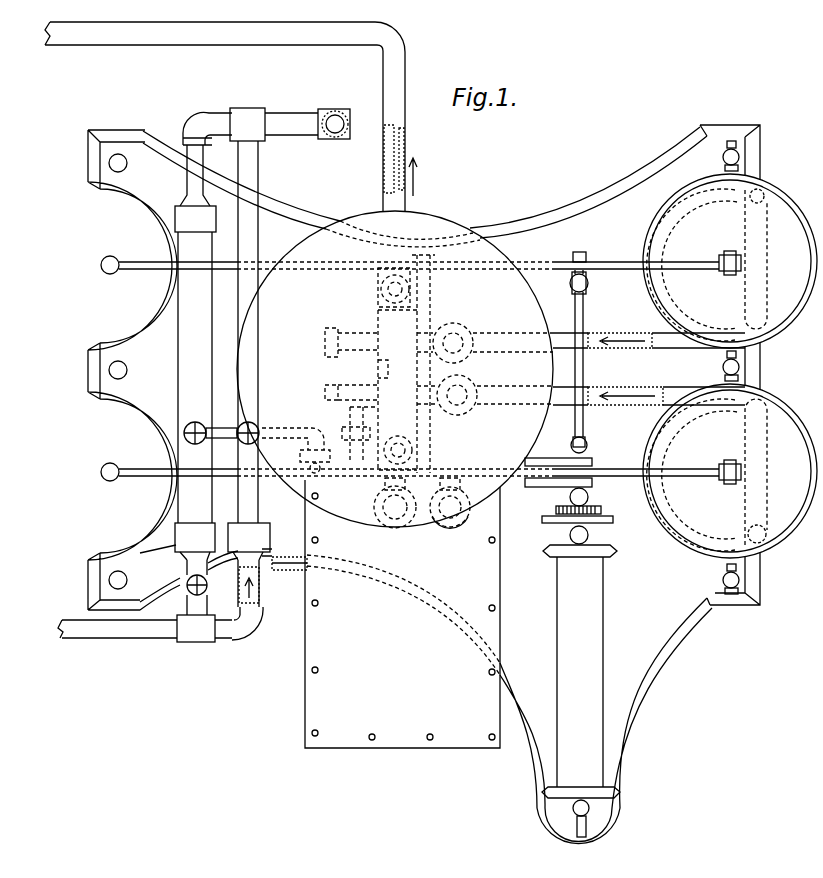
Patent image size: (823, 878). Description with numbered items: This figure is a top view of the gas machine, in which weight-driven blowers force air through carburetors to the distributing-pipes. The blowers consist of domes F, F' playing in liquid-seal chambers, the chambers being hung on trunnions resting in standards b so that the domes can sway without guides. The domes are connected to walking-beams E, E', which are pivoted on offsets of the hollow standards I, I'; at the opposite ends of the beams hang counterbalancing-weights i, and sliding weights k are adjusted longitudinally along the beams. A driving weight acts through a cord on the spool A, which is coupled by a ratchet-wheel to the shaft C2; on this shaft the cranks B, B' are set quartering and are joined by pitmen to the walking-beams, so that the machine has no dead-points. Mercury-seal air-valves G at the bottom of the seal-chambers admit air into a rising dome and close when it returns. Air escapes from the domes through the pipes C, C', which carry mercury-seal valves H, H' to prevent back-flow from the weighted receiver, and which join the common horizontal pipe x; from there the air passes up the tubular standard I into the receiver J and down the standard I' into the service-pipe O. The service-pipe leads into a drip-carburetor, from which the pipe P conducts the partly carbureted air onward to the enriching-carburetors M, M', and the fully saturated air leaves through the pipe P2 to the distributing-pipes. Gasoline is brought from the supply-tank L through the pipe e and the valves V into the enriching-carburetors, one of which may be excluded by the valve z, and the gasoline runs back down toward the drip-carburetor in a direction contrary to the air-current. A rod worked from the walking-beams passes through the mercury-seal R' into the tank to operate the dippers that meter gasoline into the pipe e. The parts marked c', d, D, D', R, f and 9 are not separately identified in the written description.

The service-pipe O is at (48, 35).
The pipe P2 is at (340, 116).
The enriching-carburetor M is at (195, 393).
The enriching-carburetor M' is at (242, 390).
The valve V is at (248, 422).
The valve z is at (213, 580).
The pipe P is at (58, 630).
The weight k is at (292, 572).
The supply-tank L is at (402, 614).
The counterbalancing-weight i is at (104, 469).
The standard b is at (722, 580).
The common horizontal pipe x is at (398, 336).
The receiver J is at (395, 364).
The standard I' is at (394, 287).
The connections c' is at (339, 363).
The pipe d is at (348, 417).
The pipe e is at (295, 428).
The standard I is at (398, 450).
The mercury-seal valve H' is at (485, 335).
The mercury-seal valve H is at (485, 387).
The mercury-seal R' is at (395, 515).
The outlet R is at (458, 503).
The pipe C' is at (649, 369).
The dome F' is at (714, 491).
The dome F is at (730, 471).
The pipe C is at (707, 370).
The mercury-seal air-valve G is at (786, 512).
The block D' is at (567, 247).
The crank B' is at (595, 335).
The walking-beam E' is at (592, 284).
The shaft C2 is at (586, 440).
The crank B is at (558, 450).
The plate D is at (550, 492).
The walking-beam E is at (577, 505).
The ball joints f is at (574, 808).
The spool A is at (581, 671).
The stem 9 is at (586, 832).